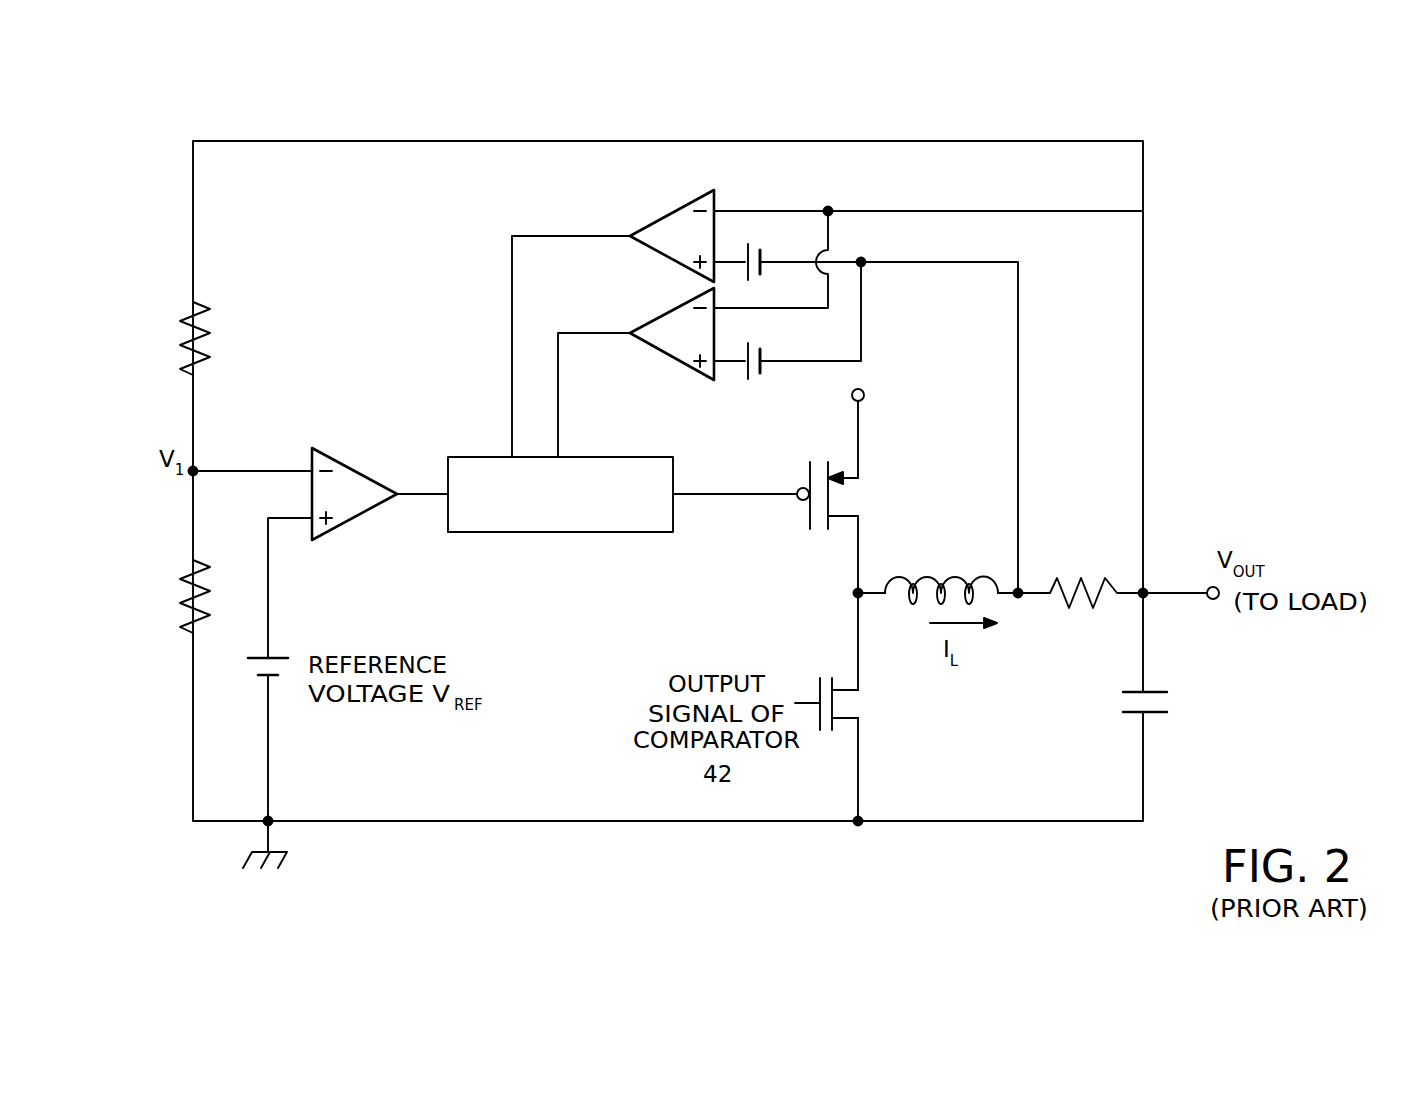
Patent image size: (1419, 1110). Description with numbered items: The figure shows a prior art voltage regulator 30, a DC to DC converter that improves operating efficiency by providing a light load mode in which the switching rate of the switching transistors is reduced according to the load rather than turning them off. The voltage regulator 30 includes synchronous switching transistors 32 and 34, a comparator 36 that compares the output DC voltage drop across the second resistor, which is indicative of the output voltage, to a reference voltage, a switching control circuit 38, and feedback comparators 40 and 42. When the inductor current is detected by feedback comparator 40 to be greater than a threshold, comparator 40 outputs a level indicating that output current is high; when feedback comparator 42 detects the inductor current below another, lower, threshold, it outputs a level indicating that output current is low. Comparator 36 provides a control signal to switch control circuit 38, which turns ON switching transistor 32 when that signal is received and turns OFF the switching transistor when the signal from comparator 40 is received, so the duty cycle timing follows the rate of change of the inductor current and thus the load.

The voltage regulator 30 is at (1028, 93).
The switching transistor 32 is at (807, 513).
The switching transistor 34 is at (863, 677).
The comparator 36 is at (338, 457).
The switching control circuit 38 is at (550, 532).
The feedback comparator 40 is at (685, 203).
The feedback comparator 42 is at (685, 367).